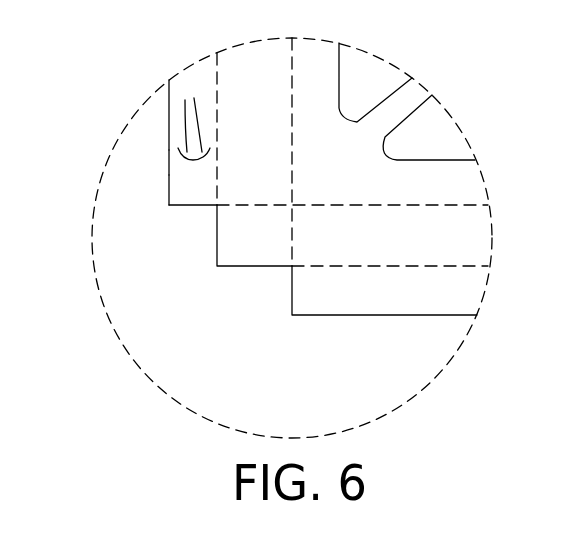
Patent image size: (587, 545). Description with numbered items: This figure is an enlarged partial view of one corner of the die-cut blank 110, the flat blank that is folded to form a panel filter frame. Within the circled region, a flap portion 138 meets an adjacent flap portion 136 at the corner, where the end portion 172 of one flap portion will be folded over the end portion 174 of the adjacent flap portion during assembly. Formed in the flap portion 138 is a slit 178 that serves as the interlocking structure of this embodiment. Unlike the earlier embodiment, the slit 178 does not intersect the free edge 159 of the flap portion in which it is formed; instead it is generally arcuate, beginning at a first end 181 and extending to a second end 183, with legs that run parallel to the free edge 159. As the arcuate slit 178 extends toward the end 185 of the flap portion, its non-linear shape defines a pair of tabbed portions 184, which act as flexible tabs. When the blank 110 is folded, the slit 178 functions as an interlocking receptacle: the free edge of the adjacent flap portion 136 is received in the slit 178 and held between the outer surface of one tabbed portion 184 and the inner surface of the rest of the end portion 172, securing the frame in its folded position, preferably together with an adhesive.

The die-cut blank 110 is at (188, 332).
The flap portion 136 is at (318, 305).
The flap portion 138 is at (178, 118).
The free edge 159 is at (170, 186).
The end portion 172 is at (190, 187).
The end portion 174 is at (305, 248).
The slit 178 is at (170, 162).
The first end 181 is at (178, 148).
The second end 183 is at (210, 148).
The tabbed portion 184 is at (193, 150).
The end of flap portion 185 is at (193, 203).